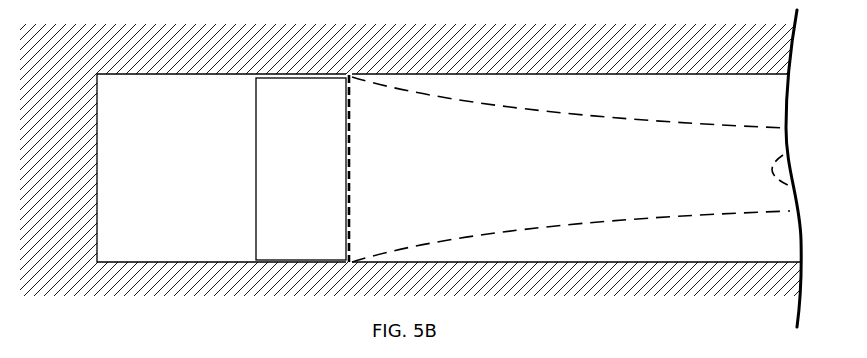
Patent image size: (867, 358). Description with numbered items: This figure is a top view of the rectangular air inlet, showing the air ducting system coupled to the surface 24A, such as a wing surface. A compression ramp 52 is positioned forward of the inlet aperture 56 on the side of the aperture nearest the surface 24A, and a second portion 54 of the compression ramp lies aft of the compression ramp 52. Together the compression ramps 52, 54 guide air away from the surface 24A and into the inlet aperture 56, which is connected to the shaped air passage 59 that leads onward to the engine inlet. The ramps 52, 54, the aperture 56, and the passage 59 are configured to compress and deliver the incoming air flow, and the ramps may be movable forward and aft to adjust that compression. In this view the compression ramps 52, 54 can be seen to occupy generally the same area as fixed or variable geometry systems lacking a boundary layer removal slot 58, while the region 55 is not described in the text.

The surface 24A is at (73, 70).
The compression ramp 52 is at (160, 94).
The second portion of compression ramp 54 is at (285, 97).
The second chamber 55 is at (468, 83).
The inlet aperture 56 is at (343, 105).
The boundary layer removal slot 58 is at (247, 118).
The shaped air passage 59 is at (637, 178).